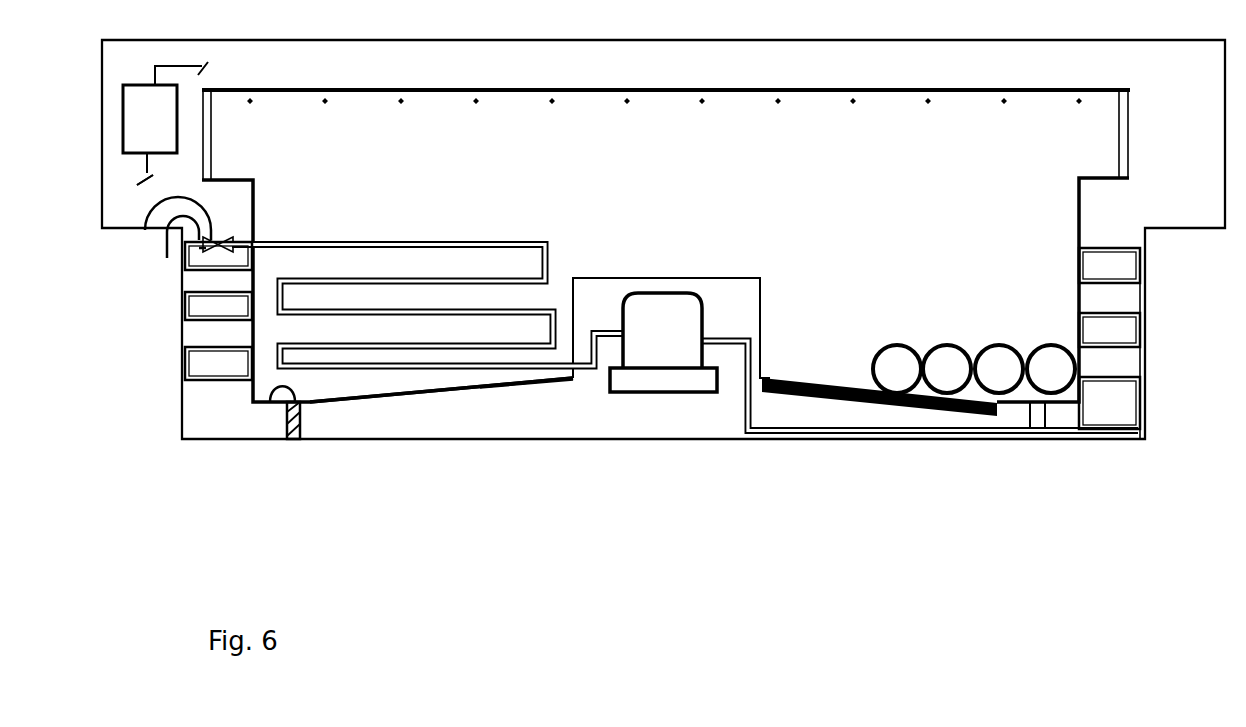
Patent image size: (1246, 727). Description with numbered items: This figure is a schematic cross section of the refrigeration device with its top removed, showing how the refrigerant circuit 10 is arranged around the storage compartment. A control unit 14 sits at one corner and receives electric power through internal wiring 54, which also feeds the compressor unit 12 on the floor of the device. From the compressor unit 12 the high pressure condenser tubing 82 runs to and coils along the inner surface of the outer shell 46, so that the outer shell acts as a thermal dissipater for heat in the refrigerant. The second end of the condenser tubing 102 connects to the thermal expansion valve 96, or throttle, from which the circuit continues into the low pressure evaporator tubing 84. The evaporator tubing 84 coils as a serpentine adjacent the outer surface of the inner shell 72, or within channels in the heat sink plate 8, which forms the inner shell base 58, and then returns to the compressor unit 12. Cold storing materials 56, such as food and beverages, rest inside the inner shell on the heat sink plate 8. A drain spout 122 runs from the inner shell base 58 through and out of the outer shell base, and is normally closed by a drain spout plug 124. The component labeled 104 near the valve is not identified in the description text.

The heat sink plate 8 is at (903, 405).
The refrigerant circuit 10 is at (470, 205).
The compressor unit 12 is at (652, 443).
The control unit 14 is at (162, 121).
The inner surface of the outer shell 46 is at (1114, 210).
The internal wiring 54 is at (142, 167).
The cold storing materials 56 is at (910, 342).
The inner shell base 58 is at (350, 400).
The outer surface of the inner shell 72 is at (500, 388).
The condenser tubing 82 is at (215, 372).
The evaporator tubing 84 is at (347, 240).
The thermal expansion valve 96 is at (147, 230).
The second end of the condenser tubing 102 is at (168, 258).
The valve 104 is at (250, 225).
The drain spout 122 is at (276, 405).
The drain spout plug 124 is at (276, 487).